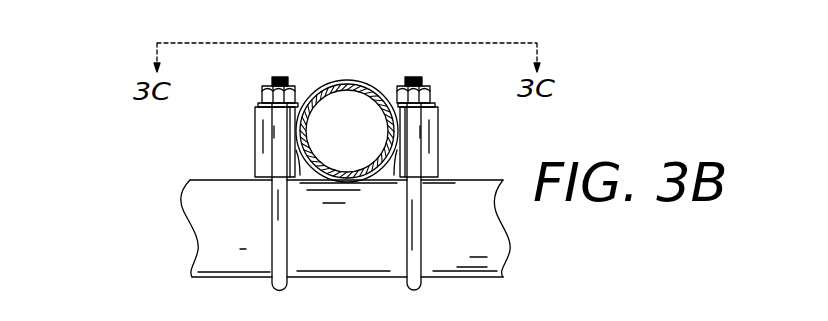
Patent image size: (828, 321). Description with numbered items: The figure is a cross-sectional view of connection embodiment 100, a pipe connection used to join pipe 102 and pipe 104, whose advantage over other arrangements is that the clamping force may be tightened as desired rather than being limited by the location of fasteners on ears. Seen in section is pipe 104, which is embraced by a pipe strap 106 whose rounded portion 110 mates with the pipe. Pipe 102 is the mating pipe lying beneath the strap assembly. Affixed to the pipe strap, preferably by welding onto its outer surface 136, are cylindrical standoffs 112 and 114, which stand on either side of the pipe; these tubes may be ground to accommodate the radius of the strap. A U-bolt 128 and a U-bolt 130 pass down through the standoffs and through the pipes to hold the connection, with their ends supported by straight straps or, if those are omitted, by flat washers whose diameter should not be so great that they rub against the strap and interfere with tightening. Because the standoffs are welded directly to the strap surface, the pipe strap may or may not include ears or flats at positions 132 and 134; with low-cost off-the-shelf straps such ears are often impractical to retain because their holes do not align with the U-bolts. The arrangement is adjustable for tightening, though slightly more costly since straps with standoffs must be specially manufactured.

The connection embodiment 100 is at (114, 75).
The pipe 102 is at (465, 250).
The pipe 104 is at (372, 168).
The pipe strap 106 is at (384, 86).
The rounded portion 110 is at (322, 86).
The cylindrical standoff 112 is at (262, 146).
The cylindrical standoff 114 is at (433, 125).
The U-bolt 128 is at (282, 252).
The U-bolt 130 is at (423, 243).
The ear position 132 is at (297, 150).
The ear position 134 is at (413, 247).
The outer surface 136 is at (290, 138).